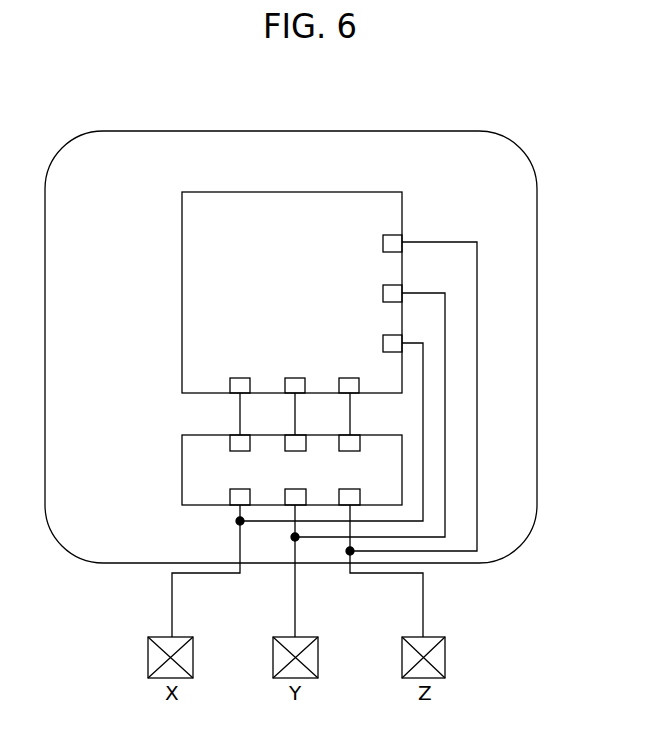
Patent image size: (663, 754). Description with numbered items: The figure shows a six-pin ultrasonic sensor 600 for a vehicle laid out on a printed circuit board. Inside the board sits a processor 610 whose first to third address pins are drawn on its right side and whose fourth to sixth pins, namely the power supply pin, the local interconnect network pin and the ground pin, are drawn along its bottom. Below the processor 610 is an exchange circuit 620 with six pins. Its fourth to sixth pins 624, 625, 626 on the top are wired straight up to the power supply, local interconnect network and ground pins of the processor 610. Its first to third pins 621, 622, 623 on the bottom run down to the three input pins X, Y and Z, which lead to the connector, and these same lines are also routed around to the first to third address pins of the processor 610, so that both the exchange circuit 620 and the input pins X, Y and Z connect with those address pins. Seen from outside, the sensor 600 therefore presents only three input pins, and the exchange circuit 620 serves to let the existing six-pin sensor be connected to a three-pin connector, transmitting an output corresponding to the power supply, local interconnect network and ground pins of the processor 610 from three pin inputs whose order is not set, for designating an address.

The sensor 600 is at (453, 131).
The processor 610 is at (369, 192).
The exchange circuit 620 is at (182, 463).
The first pin of the exchange circuit 621 is at (229, 501).
The second pin of the exchange circuit 622 is at (296, 492).
The third pin of the exchange circuit 623 is at (353, 498).
The fourth pin of the exchange circuit 624 is at (244, 446).
The fifth pin of the exchange circuit 625 is at (296, 446).
The sixth pin of the exchange circuit 626 is at (351, 446).